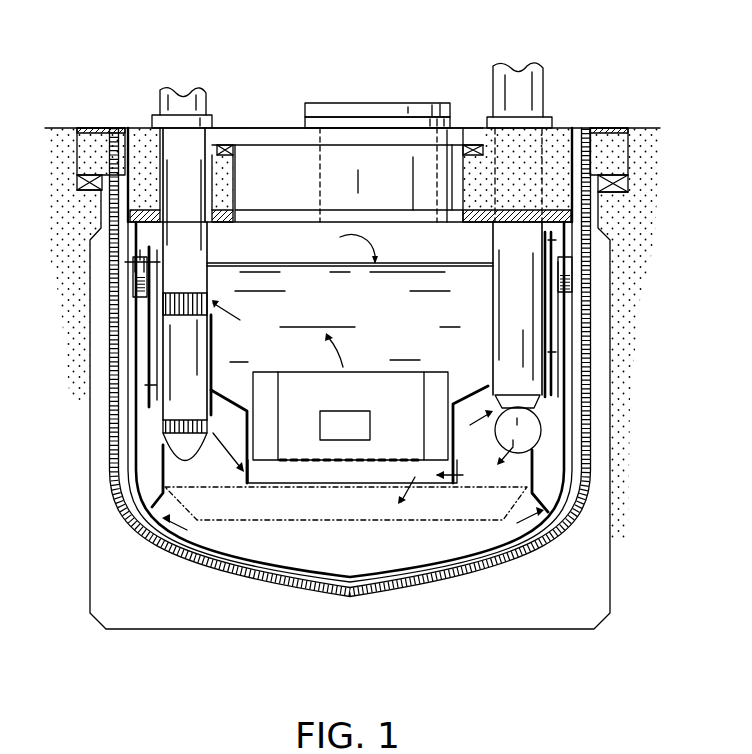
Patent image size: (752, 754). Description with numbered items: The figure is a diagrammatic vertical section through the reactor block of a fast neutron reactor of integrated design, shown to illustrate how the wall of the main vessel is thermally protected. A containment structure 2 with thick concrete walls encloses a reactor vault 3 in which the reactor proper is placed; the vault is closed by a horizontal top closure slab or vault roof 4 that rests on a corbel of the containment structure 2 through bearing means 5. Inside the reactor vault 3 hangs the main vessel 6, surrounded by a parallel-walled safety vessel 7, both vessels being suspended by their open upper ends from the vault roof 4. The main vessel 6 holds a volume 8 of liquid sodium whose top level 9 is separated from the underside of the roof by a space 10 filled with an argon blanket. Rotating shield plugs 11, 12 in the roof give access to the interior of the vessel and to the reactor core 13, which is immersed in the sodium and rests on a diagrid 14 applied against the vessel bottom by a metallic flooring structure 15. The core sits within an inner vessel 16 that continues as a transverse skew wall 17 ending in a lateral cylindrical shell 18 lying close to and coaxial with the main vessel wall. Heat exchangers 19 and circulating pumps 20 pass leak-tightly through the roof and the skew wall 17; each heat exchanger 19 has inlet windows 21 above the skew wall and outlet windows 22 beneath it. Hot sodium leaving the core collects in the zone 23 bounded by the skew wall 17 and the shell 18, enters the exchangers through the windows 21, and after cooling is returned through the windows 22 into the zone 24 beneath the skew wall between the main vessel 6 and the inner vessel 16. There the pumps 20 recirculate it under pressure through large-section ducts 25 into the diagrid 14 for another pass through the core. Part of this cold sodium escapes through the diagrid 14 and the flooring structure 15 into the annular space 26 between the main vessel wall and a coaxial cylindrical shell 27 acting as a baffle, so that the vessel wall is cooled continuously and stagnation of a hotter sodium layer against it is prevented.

The containment structure 2 is at (658, 368).
The reactor vault 3 is at (611, 530).
The vault roof 4 is at (90, 143).
The bearing means 5 is at (605, 173).
The main vessel 6 is at (208, 541).
The safety vessel 7 is at (273, 585).
The volume of liquid metal coolant 8 is at (462, 305).
The top level of liquid sodium 9 is at (350, 246).
The space filled with inert gas blanket 10 is at (283, 240).
The rotating shield plug 11 is at (273, 137).
The rotating shield plug 12 is at (350, 108).
The reactor core 13 is at (364, 371).
The diagrid 14 is at (357, 473).
The metallic flooring structure 15 is at (357, 517).
The inner vessel 16 is at (253, 430).
The skew wall 17 is at (247, 388).
The lateral cylindrical shell 18 is at (133, 307).
The heat exchanger 19 is at (180, 100).
The circulating pump 20 is at (518, 77).
The inlet windows 21 is at (182, 303).
The outlet windows 22 is at (196, 450).
The zone 23 is at (357, 318).
The zone 24 is at (547, 461).
The large-section ducts 25 is at (480, 503).
The annular space 26 is at (130, 470).
The coaxial cylindrical shell 27 is at (133, 393).